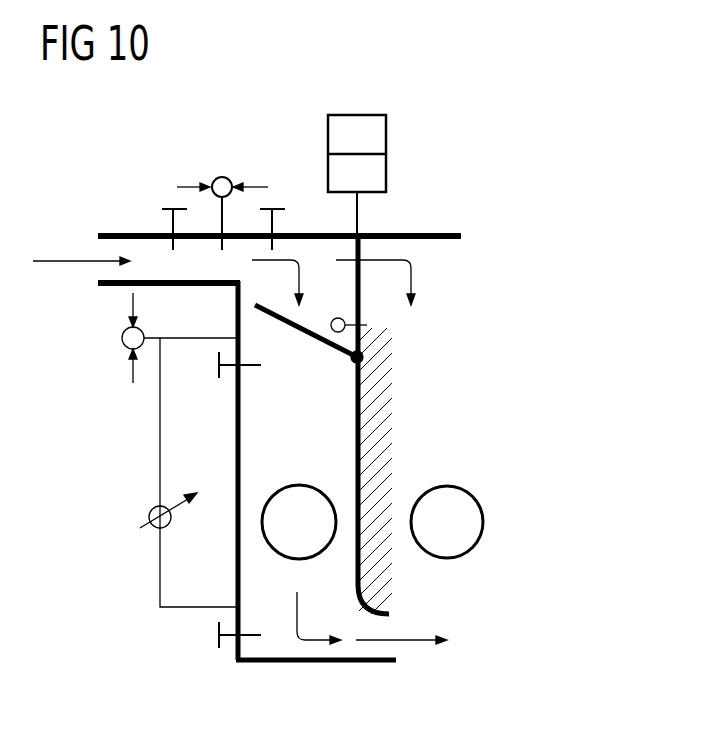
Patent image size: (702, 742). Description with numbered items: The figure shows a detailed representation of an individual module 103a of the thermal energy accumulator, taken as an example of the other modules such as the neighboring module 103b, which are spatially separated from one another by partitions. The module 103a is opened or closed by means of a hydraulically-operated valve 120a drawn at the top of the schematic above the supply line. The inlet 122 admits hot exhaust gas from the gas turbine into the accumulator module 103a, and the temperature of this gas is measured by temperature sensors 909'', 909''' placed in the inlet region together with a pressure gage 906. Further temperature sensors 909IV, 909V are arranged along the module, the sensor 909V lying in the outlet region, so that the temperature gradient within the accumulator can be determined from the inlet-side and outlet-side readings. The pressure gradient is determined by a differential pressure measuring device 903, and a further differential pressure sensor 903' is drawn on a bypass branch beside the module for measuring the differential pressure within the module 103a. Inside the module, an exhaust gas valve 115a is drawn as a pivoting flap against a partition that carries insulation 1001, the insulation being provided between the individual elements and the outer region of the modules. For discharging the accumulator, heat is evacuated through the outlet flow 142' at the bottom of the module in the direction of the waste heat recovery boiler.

The inlet 122 is at (58, 258).
The hydraulically-operated valve 120a is at (357, 115).
The pressure gage 906 is at (222, 177).
The temperature sensor 909'' is at (160, 190).
The temperature sensor 909''' is at (292, 189).
The insulation 1001 is at (383, 431).
The exhaust gas valve 115a is at (323, 345).
The differential pressure measuring device 903 is at (132, 338).
The bypass control valve 903' is at (150, 472).
The temperature sensor 909IV is at (229, 370).
The temperature sensor 909V is at (231, 640).
The module 103a is at (297, 482).
The module 103b is at (484, 520).
The outlet flow 142' is at (401, 679).